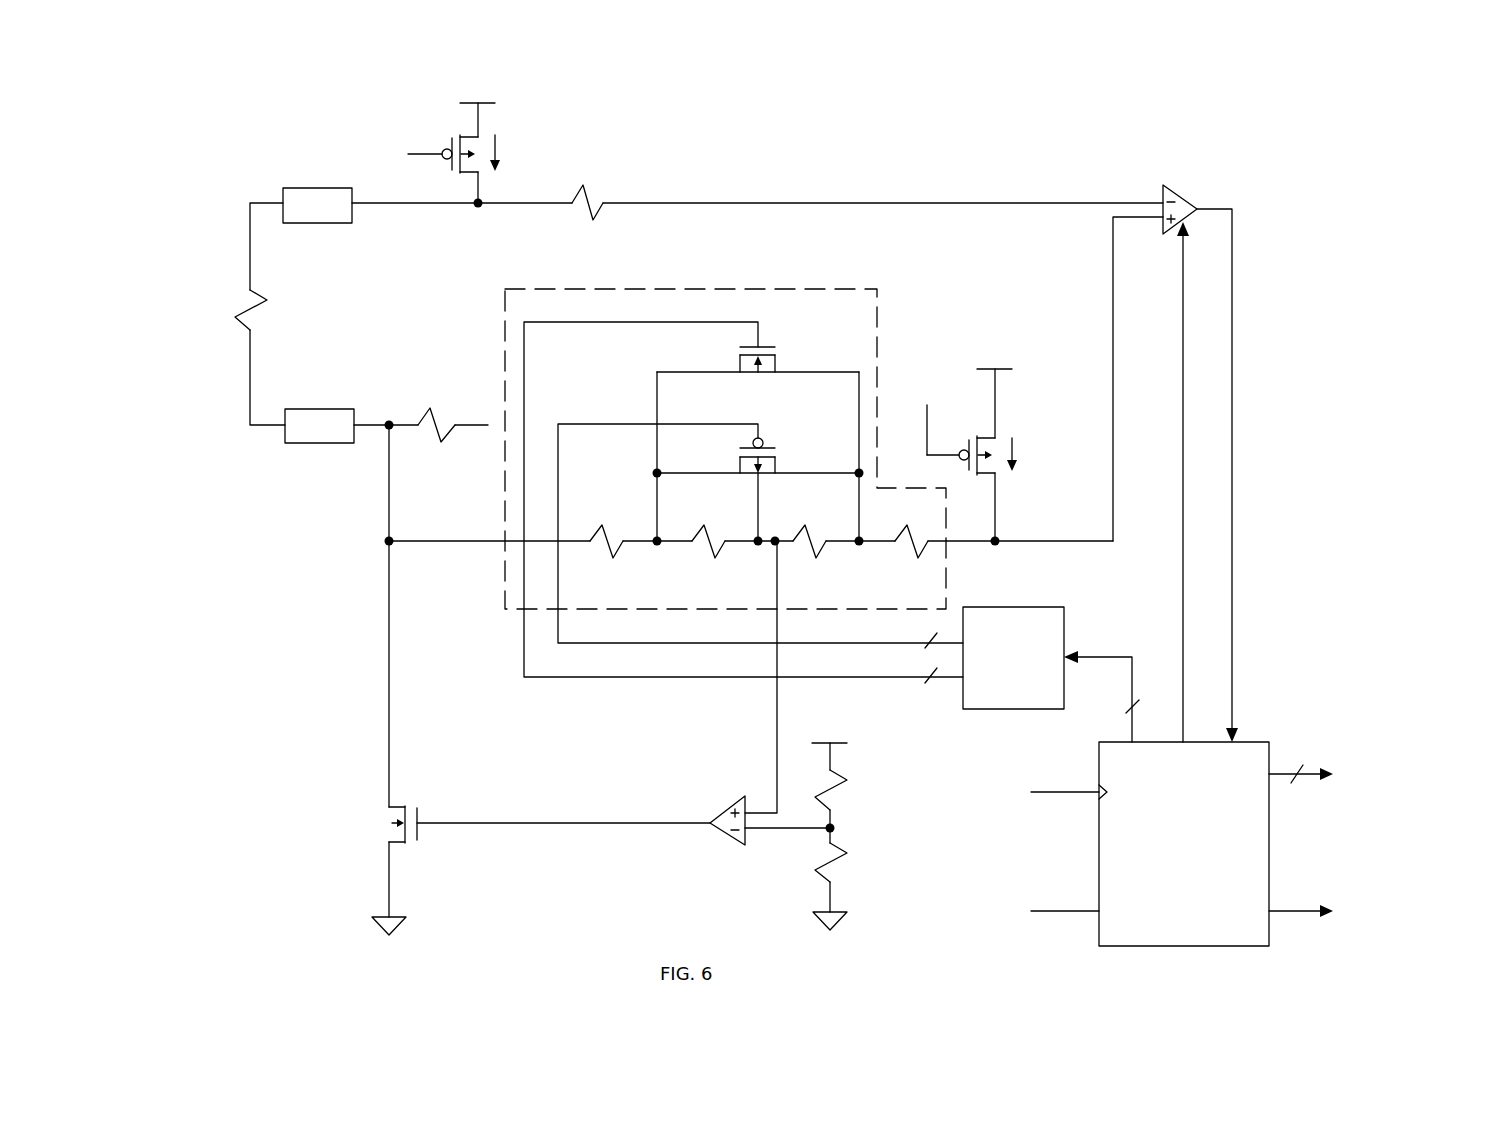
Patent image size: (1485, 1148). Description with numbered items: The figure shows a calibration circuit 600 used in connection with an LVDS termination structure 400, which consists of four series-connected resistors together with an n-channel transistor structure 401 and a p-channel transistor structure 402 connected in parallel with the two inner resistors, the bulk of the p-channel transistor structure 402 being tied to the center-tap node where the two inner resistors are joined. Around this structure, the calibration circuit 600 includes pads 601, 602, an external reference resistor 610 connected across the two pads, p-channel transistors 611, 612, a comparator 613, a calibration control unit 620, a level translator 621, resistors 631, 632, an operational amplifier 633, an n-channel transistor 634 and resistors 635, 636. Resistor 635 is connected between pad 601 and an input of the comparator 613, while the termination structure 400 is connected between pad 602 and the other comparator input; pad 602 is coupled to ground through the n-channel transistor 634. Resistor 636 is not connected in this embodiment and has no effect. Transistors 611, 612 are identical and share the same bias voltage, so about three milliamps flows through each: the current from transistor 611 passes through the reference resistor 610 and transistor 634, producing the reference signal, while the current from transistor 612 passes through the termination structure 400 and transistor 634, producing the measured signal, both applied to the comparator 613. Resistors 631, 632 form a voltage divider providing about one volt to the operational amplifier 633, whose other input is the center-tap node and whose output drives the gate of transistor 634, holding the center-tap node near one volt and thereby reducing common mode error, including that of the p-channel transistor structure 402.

The calibration circuit 600 is at (346, 113).
The pad 601 is at (308, 223).
The pad 602 is at (313, 445).
The external reference resistor 610 is at (243, 313).
The p-channel transistor 611 is at (467, 132).
The p-channel transistor 612 is at (985, 434).
The comparator 613 is at (1174, 184).
The calibration control unit 620 is at (1211, 584).
The level translator 621 is at (1061, 674).
The resistor 631 is at (840, 780).
The resistor 632 is at (847, 864).
The operational amplifier 633 is at (728, 806).
The n-channel transistor 634 is at (400, 807).
The resistor 635 is at (588, 217).
The resistor 636 is at (437, 440).
The LVDS termination structure 400 is at (792, 286).
The n-channel transistor structure 401 is at (777, 349).
The p-channel transistor structure 402 is at (777, 450).